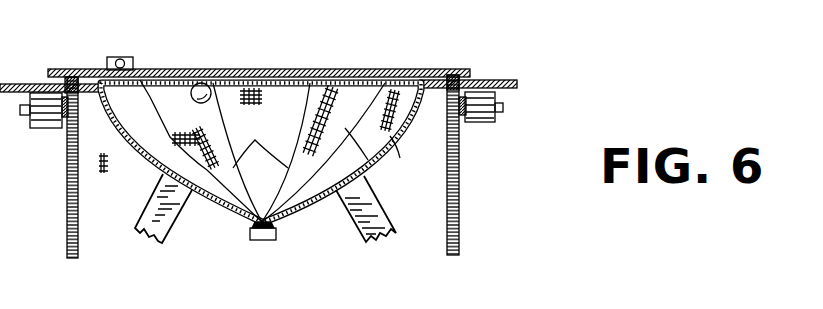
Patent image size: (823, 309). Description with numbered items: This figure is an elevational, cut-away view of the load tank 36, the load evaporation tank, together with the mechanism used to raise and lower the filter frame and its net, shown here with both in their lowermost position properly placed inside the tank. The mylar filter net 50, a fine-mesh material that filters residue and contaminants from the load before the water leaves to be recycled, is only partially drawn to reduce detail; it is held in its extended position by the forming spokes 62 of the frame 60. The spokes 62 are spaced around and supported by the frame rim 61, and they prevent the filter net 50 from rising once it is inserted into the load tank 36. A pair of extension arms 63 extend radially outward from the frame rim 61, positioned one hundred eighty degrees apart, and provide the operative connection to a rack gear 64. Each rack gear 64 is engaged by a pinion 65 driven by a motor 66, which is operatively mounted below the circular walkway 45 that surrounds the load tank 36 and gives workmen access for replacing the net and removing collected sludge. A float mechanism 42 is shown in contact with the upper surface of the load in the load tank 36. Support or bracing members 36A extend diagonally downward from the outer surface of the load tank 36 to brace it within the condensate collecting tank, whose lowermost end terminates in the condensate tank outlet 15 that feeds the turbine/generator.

The condensate tank outlet 15 is at (276, 236).
The load tank 36 is at (400, 138).
The support or bracing members 36A is at (163, 246).
The float mechanism 42 is at (201, 83).
The circular walkway 45 is at (31, 84).
The filter net 50 is at (213, 194).
The frame 60 is at (144, 156).
The frame rim 61 is at (88, 70).
The spokes 62 is at (120, 126).
The extension arms 63 is at (68, 77).
The rack gear 64 is at (78, 222).
The pinion 65 is at (62, 125).
The motor 66 is at (42, 129).